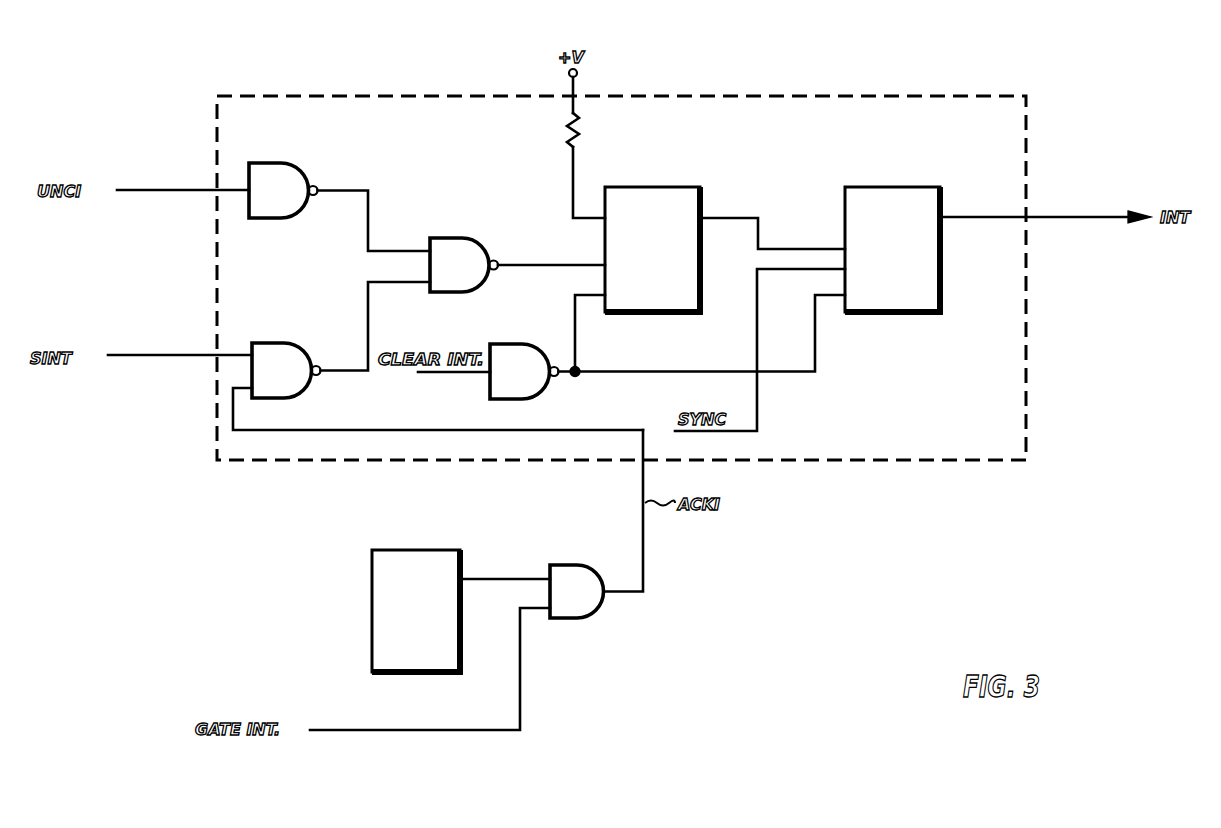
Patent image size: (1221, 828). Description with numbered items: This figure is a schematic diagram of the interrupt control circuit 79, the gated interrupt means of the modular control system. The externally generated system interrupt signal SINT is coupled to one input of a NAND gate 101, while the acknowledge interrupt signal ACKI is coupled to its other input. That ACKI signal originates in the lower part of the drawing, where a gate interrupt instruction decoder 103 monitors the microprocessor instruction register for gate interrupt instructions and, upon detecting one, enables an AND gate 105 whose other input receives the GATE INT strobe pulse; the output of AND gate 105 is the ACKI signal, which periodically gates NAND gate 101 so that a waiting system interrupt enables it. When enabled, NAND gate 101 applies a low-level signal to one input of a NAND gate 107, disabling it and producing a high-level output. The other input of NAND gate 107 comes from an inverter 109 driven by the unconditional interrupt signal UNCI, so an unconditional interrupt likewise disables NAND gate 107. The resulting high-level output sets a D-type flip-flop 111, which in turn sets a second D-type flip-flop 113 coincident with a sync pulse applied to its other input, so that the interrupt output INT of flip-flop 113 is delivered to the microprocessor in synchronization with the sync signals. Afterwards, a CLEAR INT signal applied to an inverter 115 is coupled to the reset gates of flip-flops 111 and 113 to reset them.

The interrupt control circuit 79 is at (803, 96).
The NAND gate 101 is at (282, 355).
The gate interrupt instruction decoder 103 is at (431, 560).
The AND gate 105 is at (578, 570).
The NAND gate 107 is at (458, 243).
The inverter 109 is at (290, 168).
The D-type flip-flop 111 is at (702, 190).
The second D-type flip-flop 113 is at (913, 187).
The inverter 115 is at (535, 378).